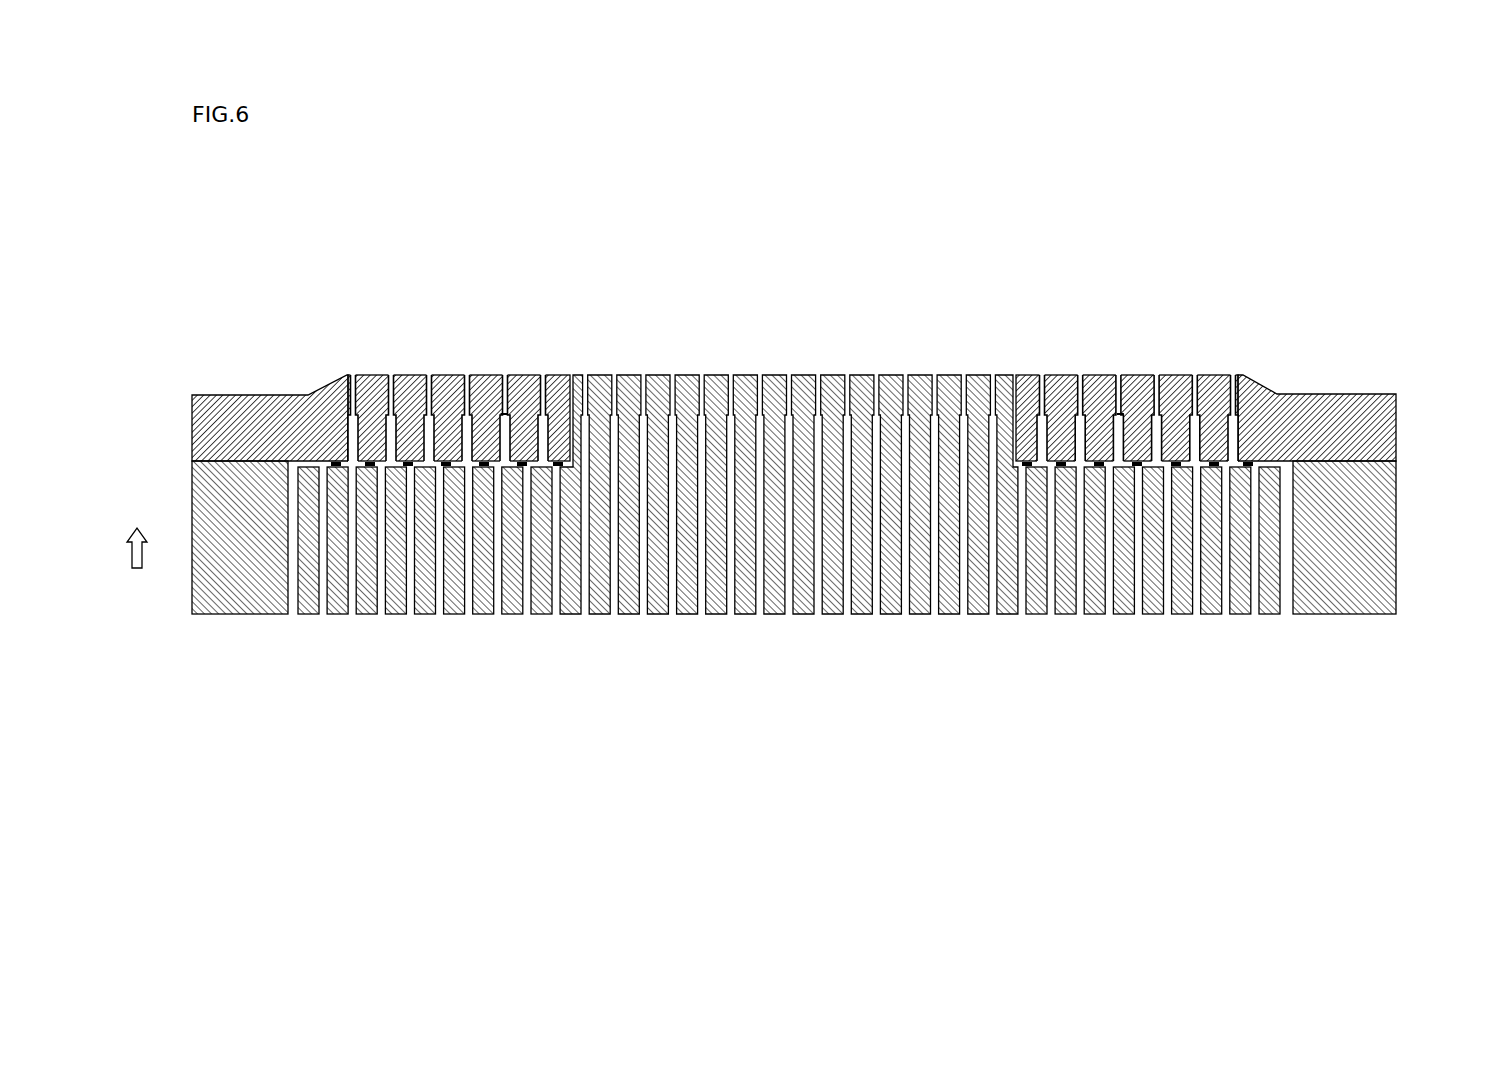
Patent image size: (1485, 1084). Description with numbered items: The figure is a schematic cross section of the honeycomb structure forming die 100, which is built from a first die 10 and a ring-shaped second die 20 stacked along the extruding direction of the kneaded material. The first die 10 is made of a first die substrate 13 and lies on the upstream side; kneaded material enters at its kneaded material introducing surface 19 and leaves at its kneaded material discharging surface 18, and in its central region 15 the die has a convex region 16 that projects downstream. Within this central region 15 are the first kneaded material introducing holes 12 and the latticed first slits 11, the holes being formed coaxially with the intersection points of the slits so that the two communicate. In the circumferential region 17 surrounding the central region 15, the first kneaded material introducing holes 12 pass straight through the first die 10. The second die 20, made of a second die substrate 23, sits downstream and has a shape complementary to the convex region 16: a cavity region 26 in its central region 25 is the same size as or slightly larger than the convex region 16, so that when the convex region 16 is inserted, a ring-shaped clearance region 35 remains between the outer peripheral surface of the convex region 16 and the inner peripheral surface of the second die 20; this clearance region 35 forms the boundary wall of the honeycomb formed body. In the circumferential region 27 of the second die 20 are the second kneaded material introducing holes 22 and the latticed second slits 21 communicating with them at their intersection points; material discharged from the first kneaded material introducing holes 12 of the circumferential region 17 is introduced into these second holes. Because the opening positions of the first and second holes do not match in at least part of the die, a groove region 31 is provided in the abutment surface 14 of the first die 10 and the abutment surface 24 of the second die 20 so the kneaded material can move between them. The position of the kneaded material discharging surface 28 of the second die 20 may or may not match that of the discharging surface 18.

The honeycomb structure forming die 100 is at (1337, 156).
The first die 10 is at (1237, 612).
The first slit 11 is at (933, 375).
The first kneaded material introducing hole 12 is at (937, 614).
The first die substrate 13 is at (1358, 550).
The abutment surface 14 is at (483, 466).
The central region 15 is at (789, 495).
The convex region 16 is at (750, 376).
The circumferential region 17 is at (789, 622).
The kneaded material discharging surface 18 is at (837, 375).
The kneaded material introducing surface 19 is at (835, 614).
The second die 20 is at (375, 374).
The second slit 21 is at (1117, 375).
The second kneaded material introducing hole 22 is at (793, 455).
The second die substrate 23 is at (220, 413).
The abutment surface 24 is at (503, 405).
The central region 25 is at (617, 355).
The cavity region 26 is at (656, 344).
The circumferential region 27 is at (799, 445).
The kneaded material discharging surface 28 is at (482, 375).
The groove region 31 is at (792, 592).
The clearance region 35 is at (571, 375).